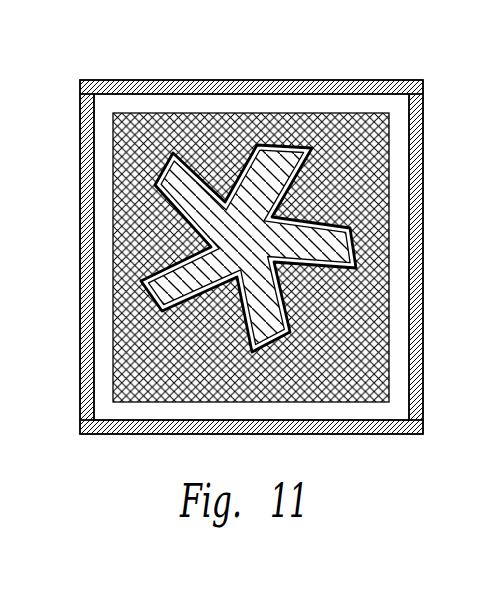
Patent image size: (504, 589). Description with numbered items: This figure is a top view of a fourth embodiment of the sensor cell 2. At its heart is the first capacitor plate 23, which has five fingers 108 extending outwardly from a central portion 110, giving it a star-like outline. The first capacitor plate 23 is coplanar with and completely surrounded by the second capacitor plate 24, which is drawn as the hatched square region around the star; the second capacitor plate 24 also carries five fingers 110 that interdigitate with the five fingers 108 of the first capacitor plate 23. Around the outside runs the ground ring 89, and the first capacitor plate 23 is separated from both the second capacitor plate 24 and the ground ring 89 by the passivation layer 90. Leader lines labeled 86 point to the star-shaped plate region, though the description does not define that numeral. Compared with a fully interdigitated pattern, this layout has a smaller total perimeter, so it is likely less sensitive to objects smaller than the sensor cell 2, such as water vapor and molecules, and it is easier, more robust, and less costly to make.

The sensor cell 2 is at (261, 221).
The first capacitor plate 23 is at (339, 253).
The second capacitor plate 24 is at (397, 305).
The star-shaped member 86 is at (250, 273).
The ground ring 89 is at (425, 357).
The passivation layer 90 is at (418, 380).
The fingers 108 is at (263, 155).
The central portion 110 is at (370, 286).